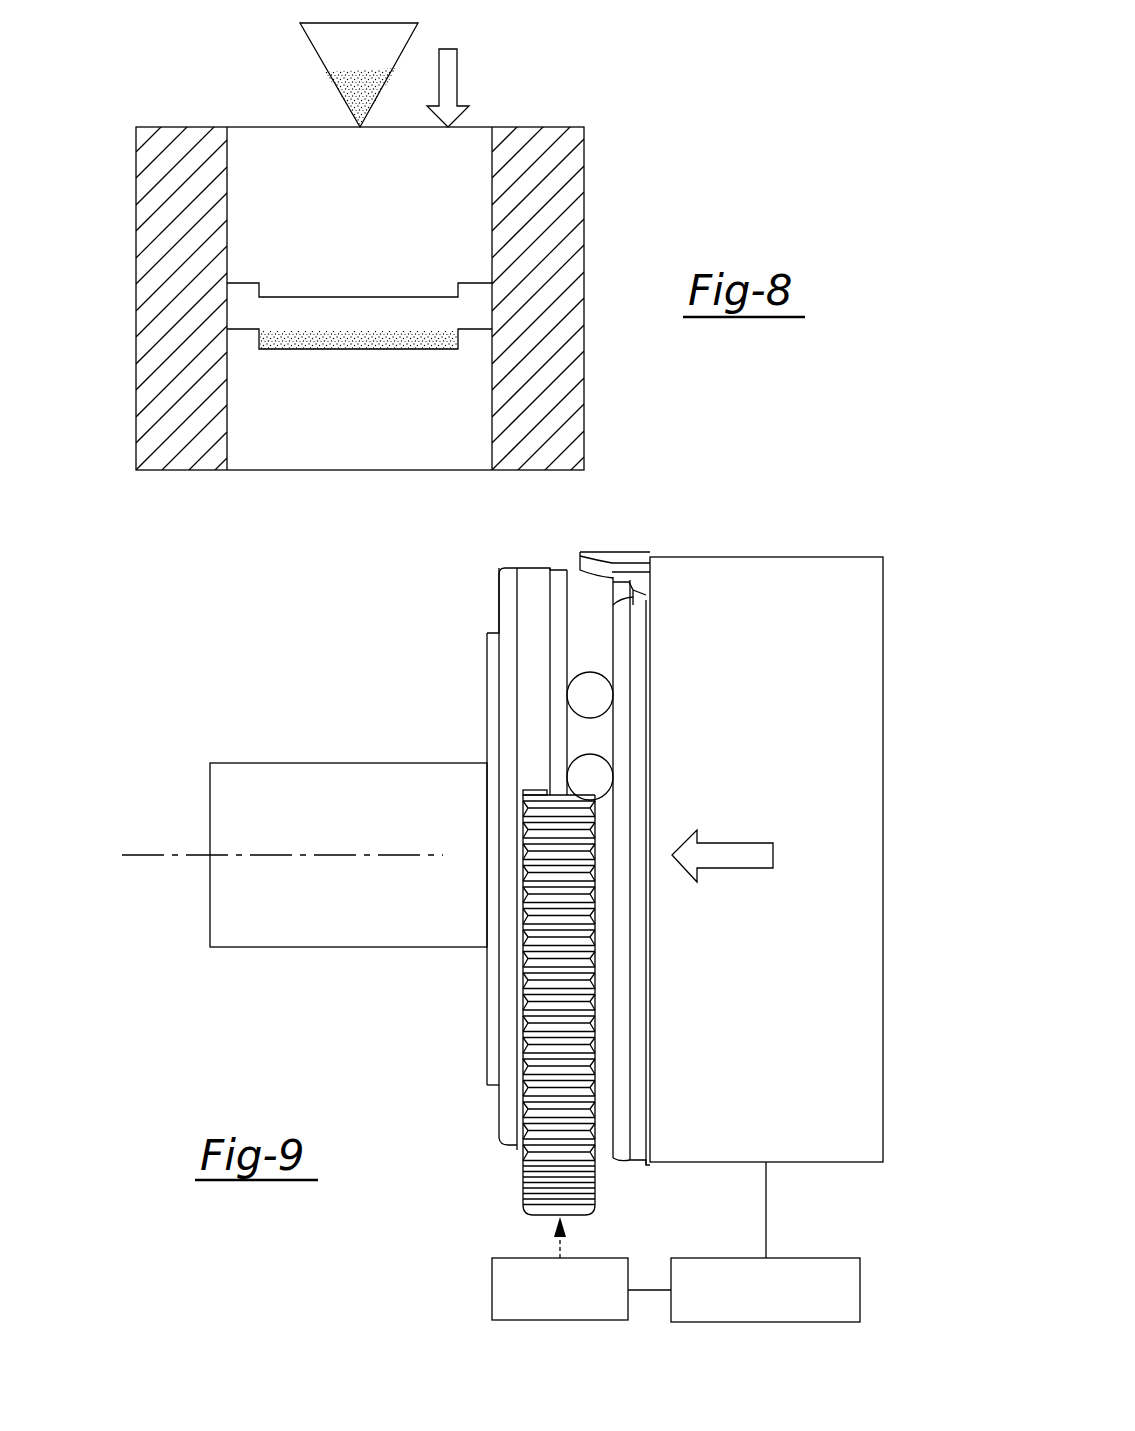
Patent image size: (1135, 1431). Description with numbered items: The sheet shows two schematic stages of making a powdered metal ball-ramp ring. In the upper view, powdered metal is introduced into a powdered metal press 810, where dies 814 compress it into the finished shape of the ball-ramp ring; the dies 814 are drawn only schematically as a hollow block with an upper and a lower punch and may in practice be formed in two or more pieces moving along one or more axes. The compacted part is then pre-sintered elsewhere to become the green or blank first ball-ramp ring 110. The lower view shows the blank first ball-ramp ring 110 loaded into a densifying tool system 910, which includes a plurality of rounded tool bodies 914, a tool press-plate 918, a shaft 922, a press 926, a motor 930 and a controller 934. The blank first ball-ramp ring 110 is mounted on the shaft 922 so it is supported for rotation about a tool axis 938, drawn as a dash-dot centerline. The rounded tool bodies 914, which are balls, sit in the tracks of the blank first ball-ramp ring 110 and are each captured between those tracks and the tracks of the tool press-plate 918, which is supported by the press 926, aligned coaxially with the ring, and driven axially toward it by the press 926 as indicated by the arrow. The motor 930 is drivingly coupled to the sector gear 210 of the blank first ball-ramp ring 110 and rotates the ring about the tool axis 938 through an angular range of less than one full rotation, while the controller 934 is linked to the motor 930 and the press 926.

In FIG. 8, the powdered metal press 810 is at (128, 214).
In FIG. 8, the dies 814 is at (286, 140).
In FIG. 9, the densifying tool system 910 is at (314, 672).
In FIG. 9, the rounded tool bodies 914 is at (590, 777).
In FIG. 9, the tool press-plate 918 is at (628, 552).
In FIG. 9, the shaft 922 is at (292, 948).
In FIG. 9, the press 926 is at (805, 602).
In FIG. 9, the tool axis 938 is at (157, 855).
In FIG. 9, the first ball-ramp ring 110 is at (487, 1030).
In FIG. 9, the sector gear 210 is at (523, 1162).
In FIG. 9, the motor 930 is at (492, 1290).
In FIG. 9, the controller 934 is at (860, 1290).